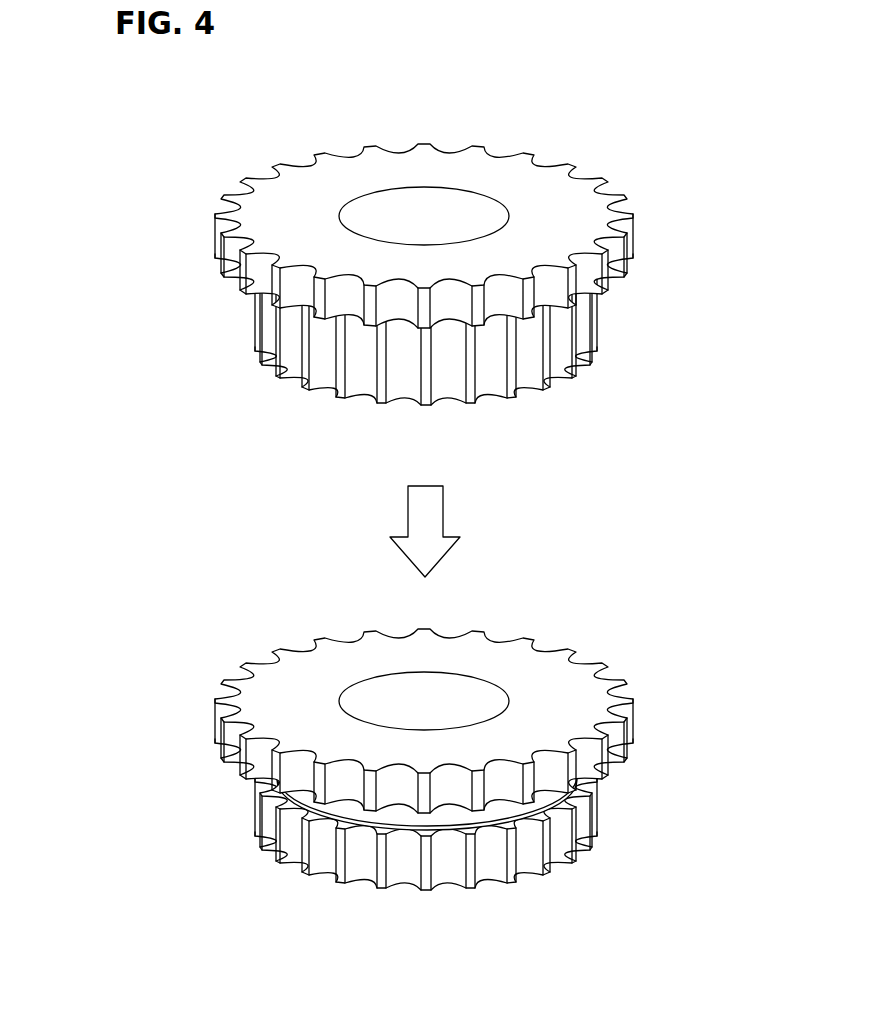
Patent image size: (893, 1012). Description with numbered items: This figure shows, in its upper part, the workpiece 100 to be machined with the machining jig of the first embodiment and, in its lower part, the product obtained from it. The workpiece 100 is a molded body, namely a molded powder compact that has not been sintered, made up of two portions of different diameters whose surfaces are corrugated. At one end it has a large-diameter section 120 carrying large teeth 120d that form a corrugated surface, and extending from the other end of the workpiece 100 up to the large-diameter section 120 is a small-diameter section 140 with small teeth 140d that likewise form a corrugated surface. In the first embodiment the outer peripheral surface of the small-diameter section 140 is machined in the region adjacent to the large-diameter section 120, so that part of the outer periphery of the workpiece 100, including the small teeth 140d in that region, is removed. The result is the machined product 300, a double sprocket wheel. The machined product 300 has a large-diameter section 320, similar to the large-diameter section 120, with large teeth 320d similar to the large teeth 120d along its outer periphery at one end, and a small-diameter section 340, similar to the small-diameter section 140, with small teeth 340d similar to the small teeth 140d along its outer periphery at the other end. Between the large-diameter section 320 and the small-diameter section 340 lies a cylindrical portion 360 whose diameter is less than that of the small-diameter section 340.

The workpiece 100 is at (409, 270).
The large-diameter section 120 is at (357, 209).
The large teeth 120d is at (215, 247).
The small-diameter section 140 is at (340, 339).
The small teeth 140d is at (280, 358).
The machined product 300 is at (409, 755).
The large-diameter section 320 is at (357, 695).
The large teeth 320d is at (357, 721).
The small-diameter section 340 is at (341, 842).
The small teeth 340d is at (282, 843).
The cylindrical portion 360 is at (508, 808).